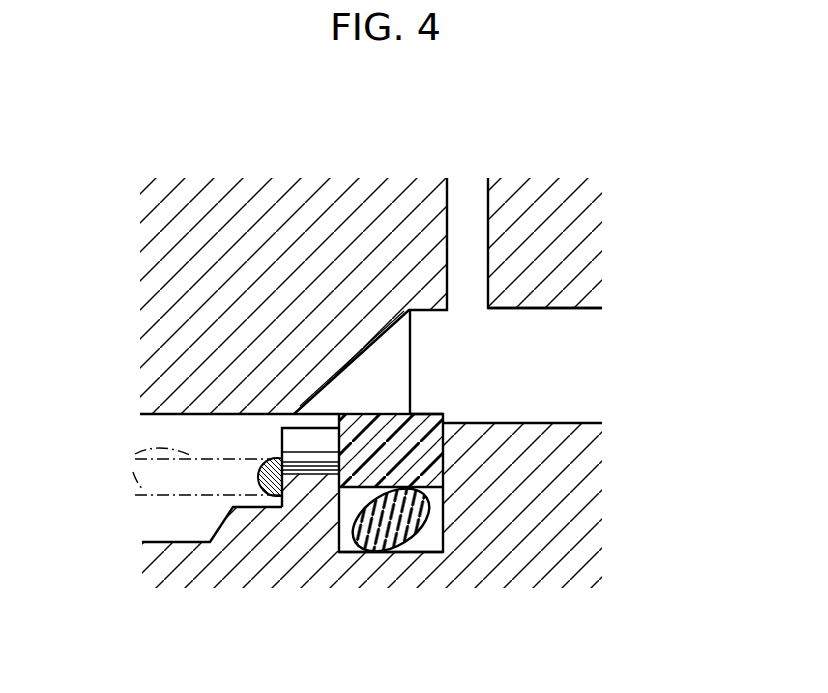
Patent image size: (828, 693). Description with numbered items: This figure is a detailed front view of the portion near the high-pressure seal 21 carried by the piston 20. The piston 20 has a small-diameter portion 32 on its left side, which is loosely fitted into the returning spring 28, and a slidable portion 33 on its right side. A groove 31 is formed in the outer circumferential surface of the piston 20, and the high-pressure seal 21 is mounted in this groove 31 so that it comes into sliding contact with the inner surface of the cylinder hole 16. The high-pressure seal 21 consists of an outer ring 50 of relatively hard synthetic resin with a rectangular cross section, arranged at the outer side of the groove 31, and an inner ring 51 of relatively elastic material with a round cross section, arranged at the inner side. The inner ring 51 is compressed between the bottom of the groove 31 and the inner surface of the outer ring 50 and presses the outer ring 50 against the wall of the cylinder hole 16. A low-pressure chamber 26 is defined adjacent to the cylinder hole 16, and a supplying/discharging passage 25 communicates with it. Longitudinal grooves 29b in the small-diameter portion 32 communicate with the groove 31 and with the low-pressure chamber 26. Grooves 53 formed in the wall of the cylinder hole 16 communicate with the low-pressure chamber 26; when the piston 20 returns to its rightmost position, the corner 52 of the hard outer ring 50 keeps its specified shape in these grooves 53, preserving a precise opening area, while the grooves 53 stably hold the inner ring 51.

The cylinder hole 16 is at (202, 418).
The piston 20 is at (547, 543).
The high-pressure seal 21 is at (448, 412).
The supplying/discharging passage 25 is at (470, 202).
The low-pressure chamber 26 is at (477, 348).
The returning spring 28 is at (140, 452).
The grooves 29b is at (302, 437).
The groove 31 is at (360, 555).
The small-diameter portion 32 is at (183, 572).
The slidable portion 33 is at (558, 438).
The outer ring 50 is at (447, 458).
The inner ring 51 is at (422, 540).
The corner 52 is at (338, 405).
The grooves 53 is at (392, 365).